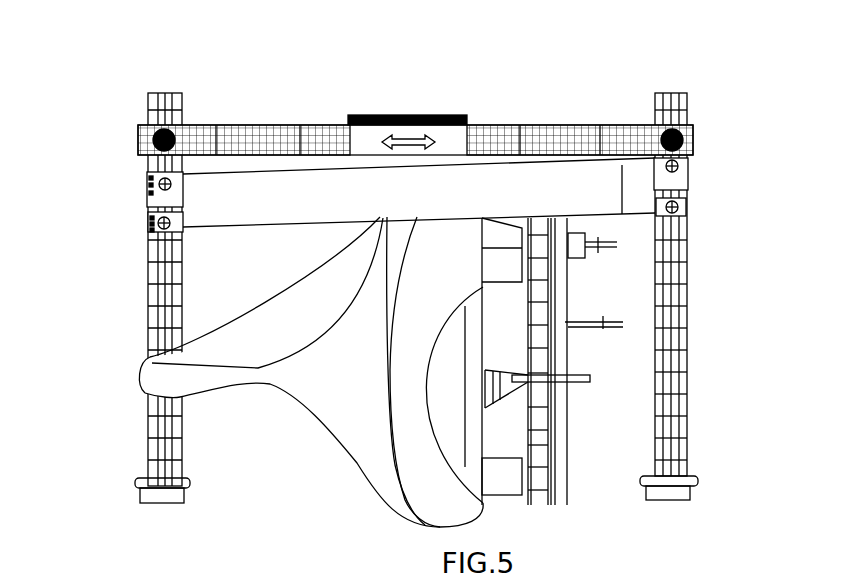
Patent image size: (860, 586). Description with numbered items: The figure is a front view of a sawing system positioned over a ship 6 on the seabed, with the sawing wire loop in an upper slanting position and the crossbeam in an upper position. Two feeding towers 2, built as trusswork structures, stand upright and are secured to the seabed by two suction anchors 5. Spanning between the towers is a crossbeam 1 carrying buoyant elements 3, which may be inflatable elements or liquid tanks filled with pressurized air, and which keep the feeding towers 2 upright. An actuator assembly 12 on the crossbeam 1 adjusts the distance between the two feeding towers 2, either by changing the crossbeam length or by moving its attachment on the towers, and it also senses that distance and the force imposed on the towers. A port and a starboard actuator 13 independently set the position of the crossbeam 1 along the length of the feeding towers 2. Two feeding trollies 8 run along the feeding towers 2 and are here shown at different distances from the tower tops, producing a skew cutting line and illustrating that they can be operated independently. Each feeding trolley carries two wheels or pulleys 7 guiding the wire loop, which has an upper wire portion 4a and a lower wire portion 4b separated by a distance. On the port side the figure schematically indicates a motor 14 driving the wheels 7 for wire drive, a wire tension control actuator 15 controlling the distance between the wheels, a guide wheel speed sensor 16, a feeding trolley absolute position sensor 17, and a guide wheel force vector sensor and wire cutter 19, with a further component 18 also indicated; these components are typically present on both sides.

The crossbeam 1 is at (250, 125).
The feeding towers 2 is at (150, 318).
The buoyant elements 3 is at (569, 125).
The upper wire portion 4a is at (622, 165).
The lower wire portion 4b is at (293, 125).
The suction anchors 5 is at (140, 497).
The ship 6 is at (263, 352).
The wheels or pulleys 7 is at (689, 166).
The feeding trollies 8 is at (147, 203).
The actuator assembly 12 is at (398, 116).
The port and starboard actuator 13 is at (150, 130).
The motor 14 is at (149, 178).
The wire tension control actuator 15 is at (149, 185).
The guide wheel speed sensor 16 is at (148, 193).
The feeding trolley absolute position sensor 17 is at (151, 220).
The adjustment element 18 is at (151, 226).
The guide wheel force vector sensor / wire cutter 19 is at (151, 232).